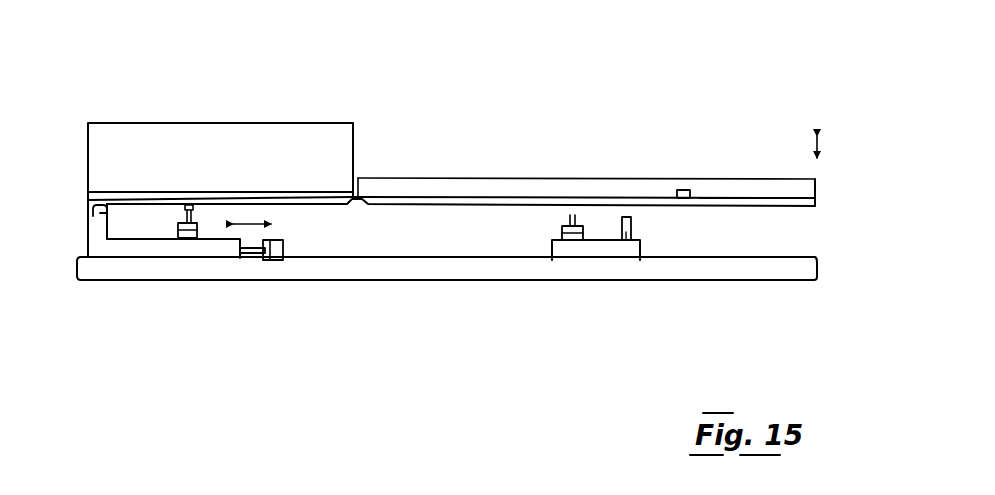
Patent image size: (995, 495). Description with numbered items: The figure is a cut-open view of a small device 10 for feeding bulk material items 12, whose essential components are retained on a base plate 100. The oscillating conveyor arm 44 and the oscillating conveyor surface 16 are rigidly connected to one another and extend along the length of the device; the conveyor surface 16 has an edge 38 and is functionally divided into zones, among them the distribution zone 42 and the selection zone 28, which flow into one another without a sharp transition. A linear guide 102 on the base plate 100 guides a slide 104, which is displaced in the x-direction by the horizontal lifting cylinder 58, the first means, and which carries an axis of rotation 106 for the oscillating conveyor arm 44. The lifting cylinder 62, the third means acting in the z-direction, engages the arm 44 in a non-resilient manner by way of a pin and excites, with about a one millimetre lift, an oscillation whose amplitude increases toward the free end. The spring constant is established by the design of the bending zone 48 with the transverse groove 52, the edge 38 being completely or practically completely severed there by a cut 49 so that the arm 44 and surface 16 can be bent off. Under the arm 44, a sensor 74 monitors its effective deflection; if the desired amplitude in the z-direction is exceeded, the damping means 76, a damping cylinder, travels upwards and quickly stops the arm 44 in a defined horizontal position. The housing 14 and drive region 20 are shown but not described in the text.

The small device 10 is at (92, 410).
The bulk material items 12 is at (684, 190).
The housing 14 is at (189, 192).
The oscillating conveyor surface 16 is at (797, 198).
The drive unit 20 is at (447, 203).
The selection zone 28 is at (757, 103).
The edge 38 is at (487, 185).
The distribution zone 42 is at (461, 178).
The oscillating conveyor arm 44 is at (744, 200).
The bending zone 48 is at (357, 176).
The cut 49 is at (392, 137).
The transverse groove 52 is at (357, 207).
The horizontal lifting cylinder 58 is at (274, 260).
The lifting cylinder 62 is at (188, 238).
The sensor 74 is at (625, 240).
The damping means 76 is at (572, 249).
The base plate 100 is at (475, 243).
The linear guide 102 is at (227, 260).
The slide 104 is at (143, 239).
The axis of rotation 106 is at (97, 215).